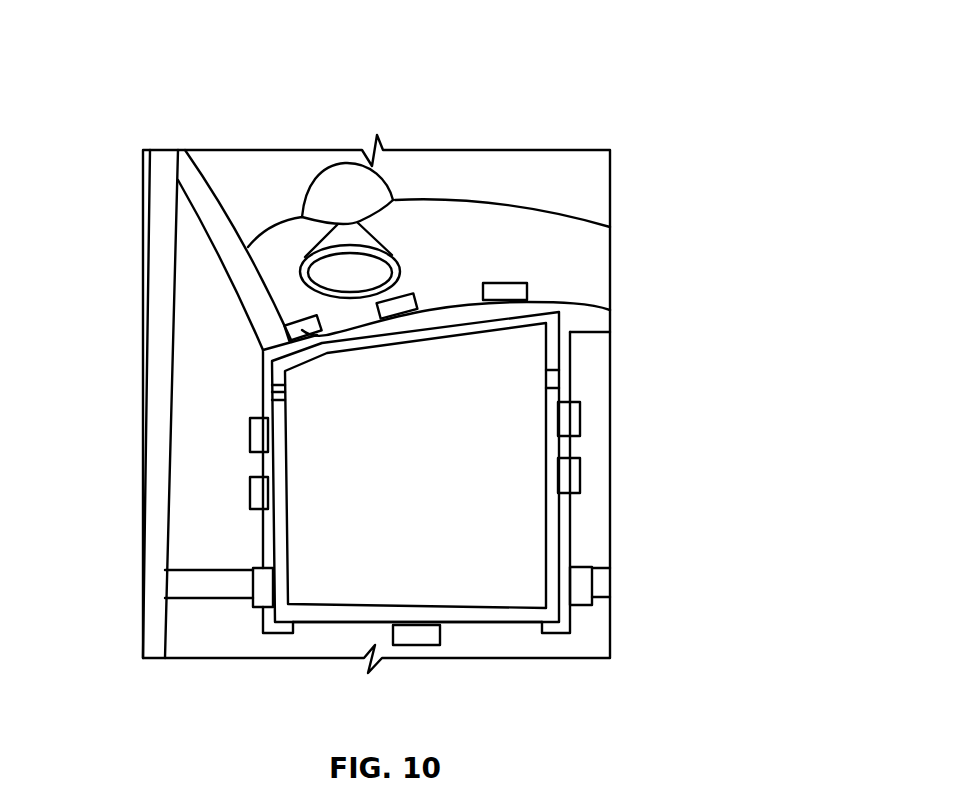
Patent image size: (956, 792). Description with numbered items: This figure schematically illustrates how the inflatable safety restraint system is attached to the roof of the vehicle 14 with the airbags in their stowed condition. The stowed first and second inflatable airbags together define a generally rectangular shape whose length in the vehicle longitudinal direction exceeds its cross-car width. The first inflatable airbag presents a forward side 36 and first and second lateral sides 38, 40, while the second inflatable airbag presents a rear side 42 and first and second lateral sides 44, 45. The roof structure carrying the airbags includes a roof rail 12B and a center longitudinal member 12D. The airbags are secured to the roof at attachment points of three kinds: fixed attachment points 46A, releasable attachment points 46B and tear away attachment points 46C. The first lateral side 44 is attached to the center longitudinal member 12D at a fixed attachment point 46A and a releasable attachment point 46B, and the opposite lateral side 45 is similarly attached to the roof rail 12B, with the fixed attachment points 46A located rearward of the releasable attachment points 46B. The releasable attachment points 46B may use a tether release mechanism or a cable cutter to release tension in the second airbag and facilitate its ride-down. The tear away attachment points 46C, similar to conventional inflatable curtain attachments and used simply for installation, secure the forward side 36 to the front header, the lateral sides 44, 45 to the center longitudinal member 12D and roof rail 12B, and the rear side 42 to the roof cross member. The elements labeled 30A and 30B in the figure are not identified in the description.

The vehicle 14 is at (160, 218).
The center longitudinal member 12D is at (563, 393).
The roof rail 12B is at (270, 533).
The first display 30A is at (272, 392).
The second display 30B is at (552, 343).
The forward side 36 is at (470, 323).
The first lateral side 38 is at (572, 328).
The second lateral side 40 is at (293, 373).
The rear side 42 is at (353, 608).
The first lateral side 44 is at (553, 547).
The second lateral side 45 is at (283, 580).
The fixed attachment points 46A is at (262, 500).
The releasable attachment points 46B is at (265, 442).
The tear away attachment points 46C is at (303, 326).